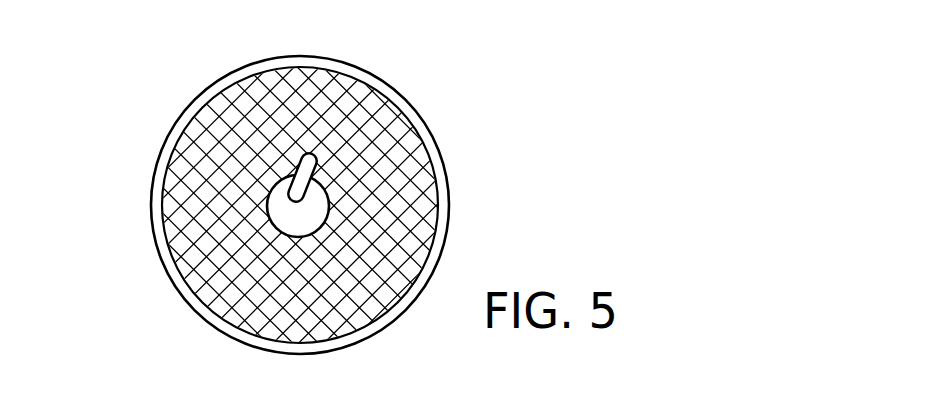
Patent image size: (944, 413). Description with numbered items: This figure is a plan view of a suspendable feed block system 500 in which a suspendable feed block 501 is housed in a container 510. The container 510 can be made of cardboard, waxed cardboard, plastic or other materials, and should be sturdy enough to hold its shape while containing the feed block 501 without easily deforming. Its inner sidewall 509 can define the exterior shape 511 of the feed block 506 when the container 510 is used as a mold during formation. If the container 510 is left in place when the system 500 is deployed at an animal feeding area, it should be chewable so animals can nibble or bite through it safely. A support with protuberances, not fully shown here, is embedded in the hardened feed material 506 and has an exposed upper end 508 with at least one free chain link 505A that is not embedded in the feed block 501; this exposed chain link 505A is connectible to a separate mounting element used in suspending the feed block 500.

The suspendable feed block system 500 is at (150, 97).
The container 510 is at (375, 77).
The exterior shape 511 is at (182, 272).
The inner sidewall 509 is at (162, 233).
The suspendable feed block 501 is at (404, 136).
The hardened feed material 506 is at (327, 300).
The exposed upper end 508 is at (328, 204).
The free chain link 505A is at (306, 171).